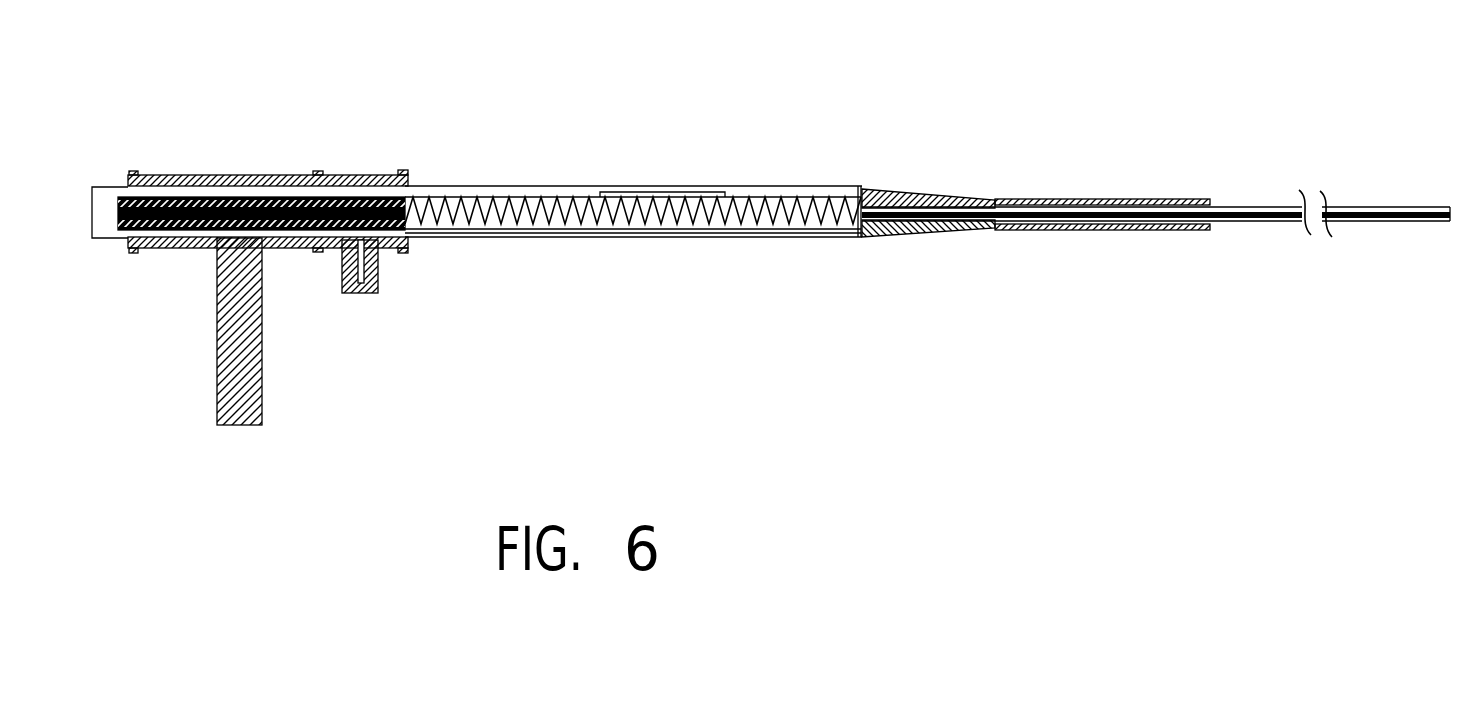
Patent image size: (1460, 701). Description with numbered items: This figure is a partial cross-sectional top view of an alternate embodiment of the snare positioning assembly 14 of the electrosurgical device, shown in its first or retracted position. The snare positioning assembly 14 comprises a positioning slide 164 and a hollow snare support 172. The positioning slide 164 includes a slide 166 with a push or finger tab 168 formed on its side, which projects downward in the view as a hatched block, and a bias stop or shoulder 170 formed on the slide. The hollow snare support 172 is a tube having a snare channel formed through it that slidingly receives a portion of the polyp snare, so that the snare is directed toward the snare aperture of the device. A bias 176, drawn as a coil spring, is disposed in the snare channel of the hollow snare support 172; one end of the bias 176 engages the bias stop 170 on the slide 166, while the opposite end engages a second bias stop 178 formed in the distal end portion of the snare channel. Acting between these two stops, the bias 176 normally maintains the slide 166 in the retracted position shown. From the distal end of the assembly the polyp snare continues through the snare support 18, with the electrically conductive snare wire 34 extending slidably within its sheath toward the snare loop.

The snare positioning assembly 14 is at (508, 135).
The snare support 18 is at (913, 178).
The snare wire 34 is at (1050, 210).
The positioning slide 164 is at (668, 163).
The slide 166 is at (245, 172).
The finger tab 168 is at (217, 366).
The bias stop 170 is at (360, 195).
The hollow snare support 172 is at (587, 277).
The bias 176 is at (716, 226).
The second bias stop 178 is at (857, 185).